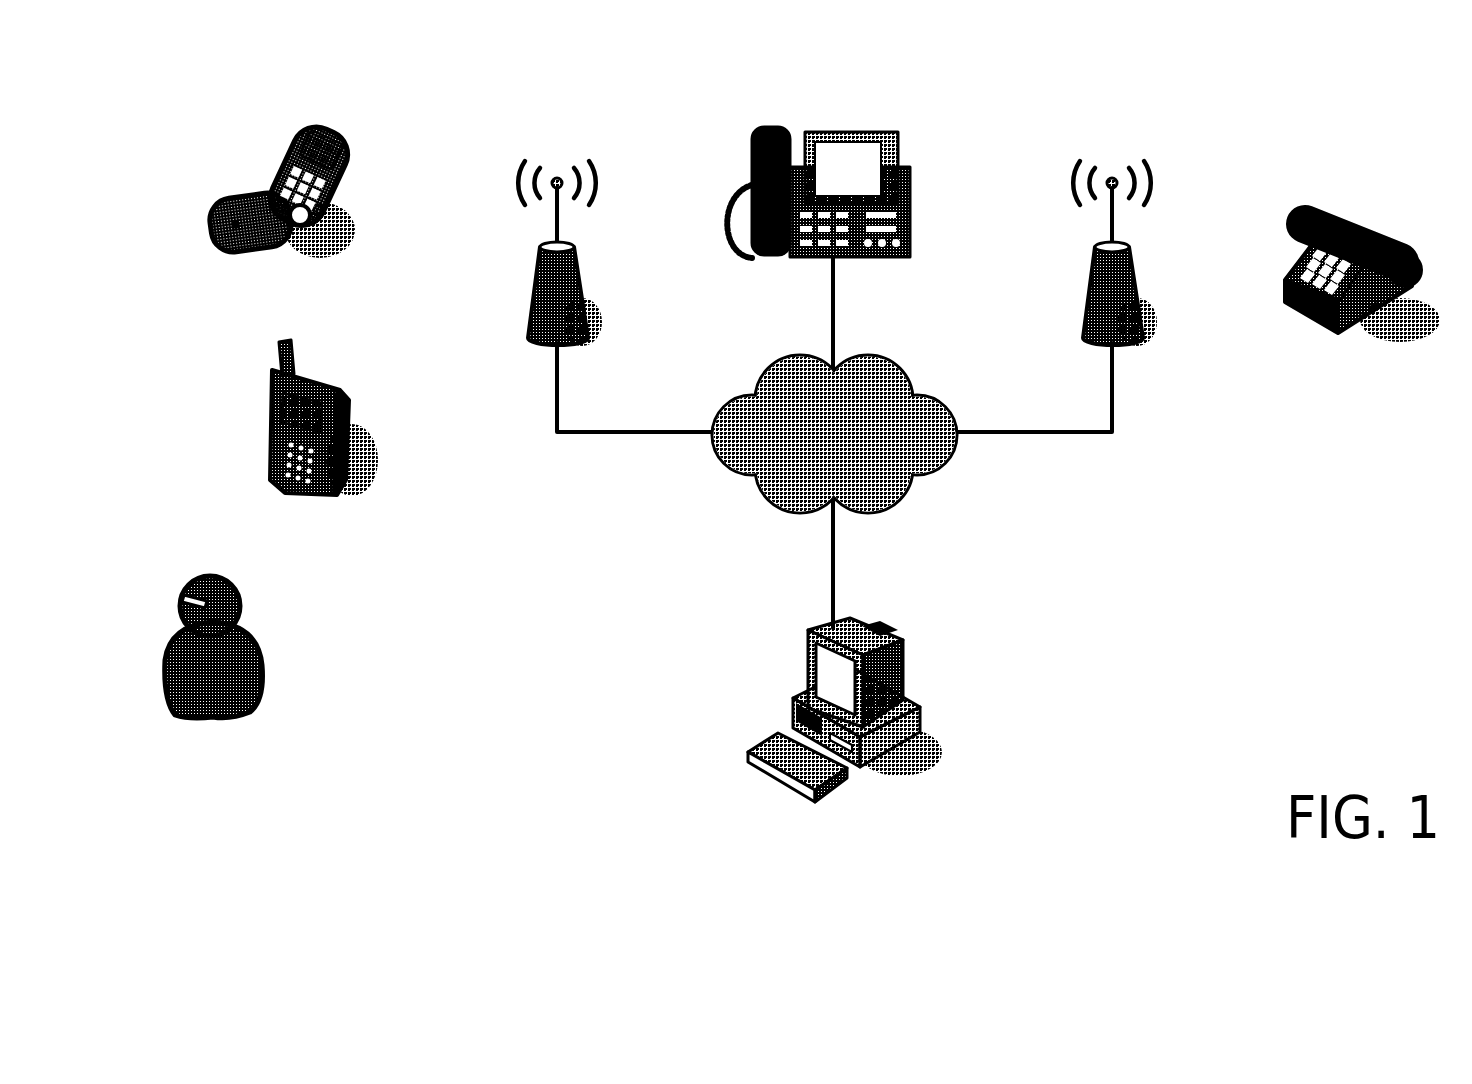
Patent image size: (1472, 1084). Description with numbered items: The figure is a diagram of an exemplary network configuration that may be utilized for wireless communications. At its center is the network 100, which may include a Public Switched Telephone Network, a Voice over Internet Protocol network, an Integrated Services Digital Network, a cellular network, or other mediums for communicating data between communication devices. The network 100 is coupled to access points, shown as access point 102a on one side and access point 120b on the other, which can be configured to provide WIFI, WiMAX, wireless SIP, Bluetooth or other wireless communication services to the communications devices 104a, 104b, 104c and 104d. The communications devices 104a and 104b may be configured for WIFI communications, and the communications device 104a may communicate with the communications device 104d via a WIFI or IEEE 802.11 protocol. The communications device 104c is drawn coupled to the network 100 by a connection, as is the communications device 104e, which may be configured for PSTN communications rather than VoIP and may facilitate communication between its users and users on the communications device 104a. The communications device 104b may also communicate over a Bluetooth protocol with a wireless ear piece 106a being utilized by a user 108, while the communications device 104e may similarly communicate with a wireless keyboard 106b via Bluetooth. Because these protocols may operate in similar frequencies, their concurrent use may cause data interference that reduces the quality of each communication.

The network 100 is at (834, 434).
The access point 102a is at (586, 297).
The access point 120b is at (1083, 297).
The communications device 104a is at (338, 124).
The communications device 104b is at (324, 377).
The communications device 104c is at (907, 167).
The communications device 104d is at (1358, 210).
The communications device 104e is at (917, 705).
The wireless ear piece 106a is at (184, 597).
The wireless keyboard 106b is at (750, 757).
The user 108 is at (263, 660).